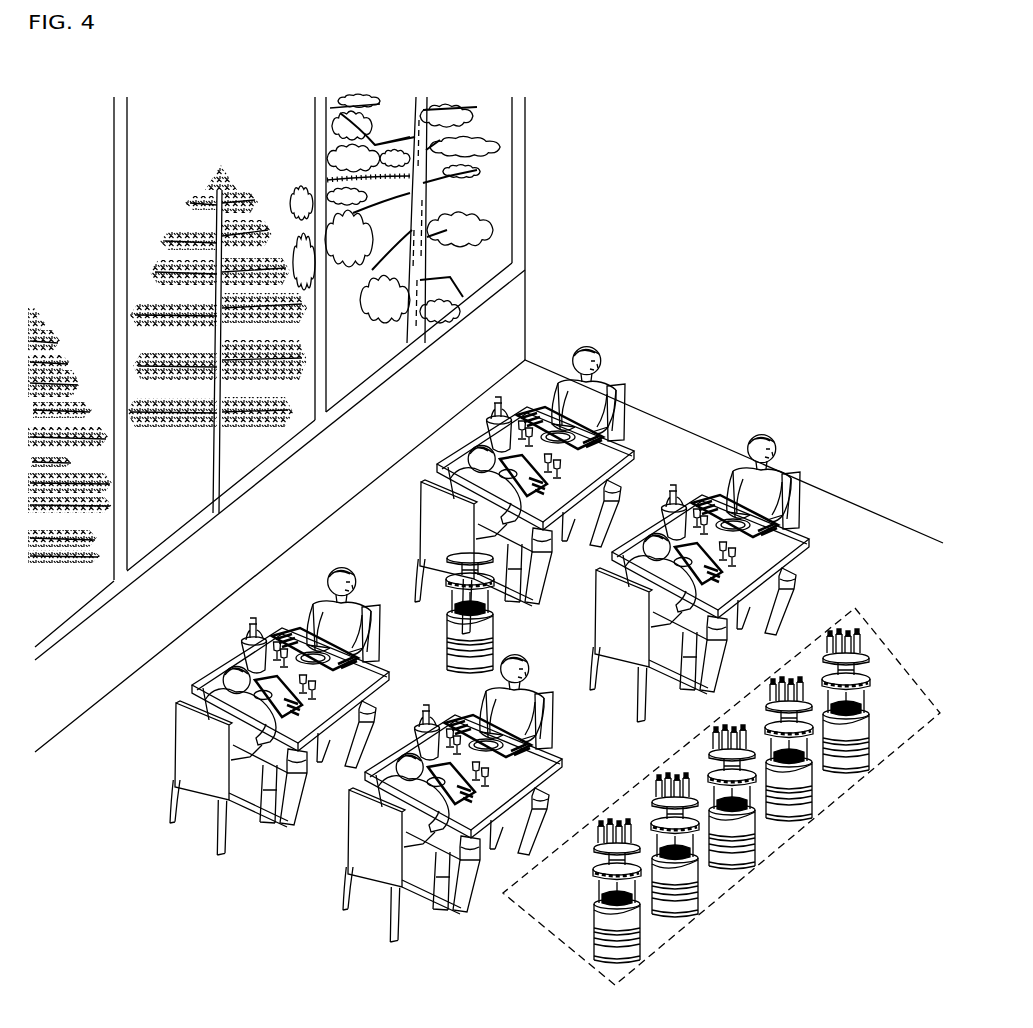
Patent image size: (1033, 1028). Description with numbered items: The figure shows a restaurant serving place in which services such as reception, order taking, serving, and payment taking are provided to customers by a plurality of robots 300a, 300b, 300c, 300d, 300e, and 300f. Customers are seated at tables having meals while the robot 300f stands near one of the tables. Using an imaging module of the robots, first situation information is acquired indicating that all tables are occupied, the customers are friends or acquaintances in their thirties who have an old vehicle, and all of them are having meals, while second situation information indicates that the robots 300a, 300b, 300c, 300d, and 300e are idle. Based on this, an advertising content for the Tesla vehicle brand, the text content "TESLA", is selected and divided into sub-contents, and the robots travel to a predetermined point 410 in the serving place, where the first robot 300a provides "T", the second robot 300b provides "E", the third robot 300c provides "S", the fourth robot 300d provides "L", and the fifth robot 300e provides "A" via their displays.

The first robot 300a is at (857, 758).
The second robot 300b is at (800, 808).
The third robot 300c is at (744, 855).
The fourth robot 300d is at (687, 903).
The fifth robot 300e is at (628, 947).
The robot 300f is at (492, 640).
The predetermined point 410 is at (855, 608).